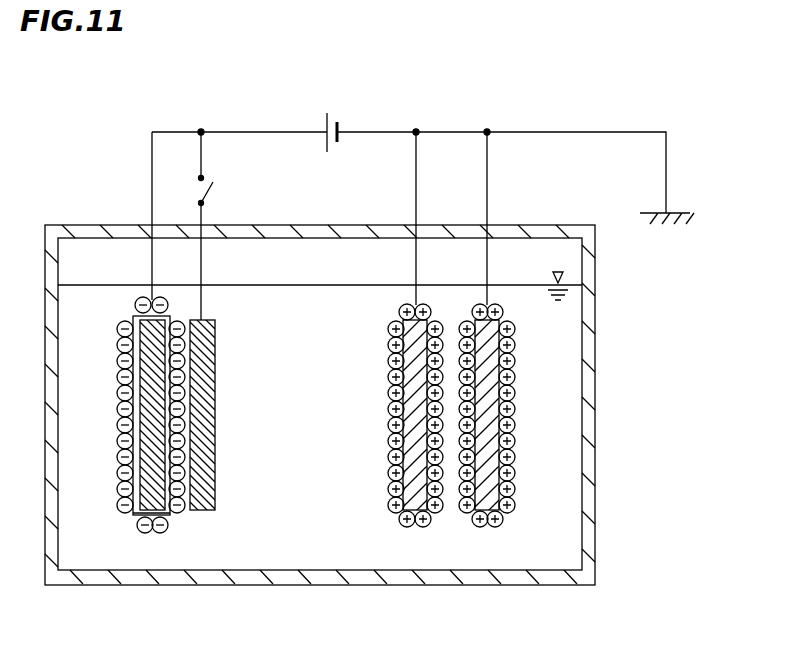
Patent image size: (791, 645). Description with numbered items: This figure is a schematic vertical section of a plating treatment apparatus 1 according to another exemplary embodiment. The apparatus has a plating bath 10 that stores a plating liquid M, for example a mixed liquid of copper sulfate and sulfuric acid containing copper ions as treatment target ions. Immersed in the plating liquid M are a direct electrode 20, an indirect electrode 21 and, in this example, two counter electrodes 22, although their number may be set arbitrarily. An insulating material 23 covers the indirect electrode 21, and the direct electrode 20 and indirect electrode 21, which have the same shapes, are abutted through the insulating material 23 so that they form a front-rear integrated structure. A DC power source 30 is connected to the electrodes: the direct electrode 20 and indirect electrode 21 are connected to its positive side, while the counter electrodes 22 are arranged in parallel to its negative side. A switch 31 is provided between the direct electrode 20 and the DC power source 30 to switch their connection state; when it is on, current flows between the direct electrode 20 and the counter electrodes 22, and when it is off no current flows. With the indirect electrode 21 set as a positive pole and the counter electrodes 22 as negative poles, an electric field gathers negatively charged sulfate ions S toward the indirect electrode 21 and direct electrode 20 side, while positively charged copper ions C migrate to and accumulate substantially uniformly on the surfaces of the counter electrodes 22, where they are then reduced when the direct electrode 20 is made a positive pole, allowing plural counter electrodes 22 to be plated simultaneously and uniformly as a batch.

The plating treatment apparatus 1 is at (275, 101).
The DC power source 30 is at (338, 127).
The switch 31 is at (216, 191).
The plating bath 10 is at (588, 425).
The plating liquid M is at (570, 333).
The indirect electrode 21 is at (133, 405).
The sulfate ions S is at (166, 528).
The insulating material 23 is at (134, 515).
The direct electrode 20 is at (216, 405).
The counter electrodes 22 is at (394, 403).
The copper ions C is at (403, 511).